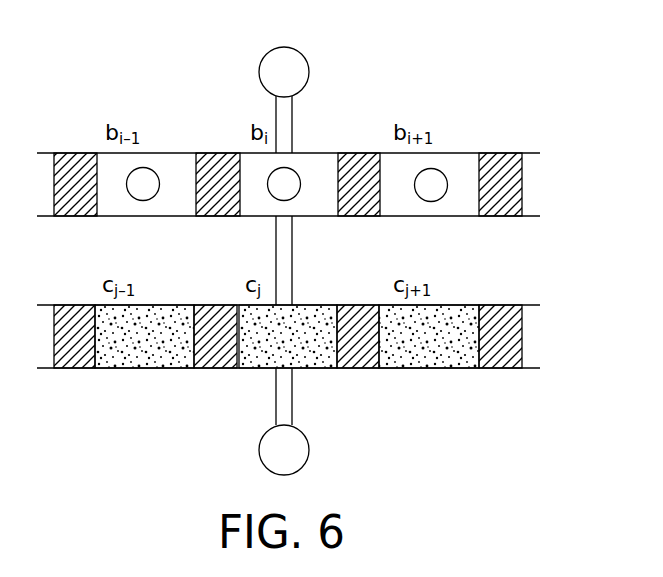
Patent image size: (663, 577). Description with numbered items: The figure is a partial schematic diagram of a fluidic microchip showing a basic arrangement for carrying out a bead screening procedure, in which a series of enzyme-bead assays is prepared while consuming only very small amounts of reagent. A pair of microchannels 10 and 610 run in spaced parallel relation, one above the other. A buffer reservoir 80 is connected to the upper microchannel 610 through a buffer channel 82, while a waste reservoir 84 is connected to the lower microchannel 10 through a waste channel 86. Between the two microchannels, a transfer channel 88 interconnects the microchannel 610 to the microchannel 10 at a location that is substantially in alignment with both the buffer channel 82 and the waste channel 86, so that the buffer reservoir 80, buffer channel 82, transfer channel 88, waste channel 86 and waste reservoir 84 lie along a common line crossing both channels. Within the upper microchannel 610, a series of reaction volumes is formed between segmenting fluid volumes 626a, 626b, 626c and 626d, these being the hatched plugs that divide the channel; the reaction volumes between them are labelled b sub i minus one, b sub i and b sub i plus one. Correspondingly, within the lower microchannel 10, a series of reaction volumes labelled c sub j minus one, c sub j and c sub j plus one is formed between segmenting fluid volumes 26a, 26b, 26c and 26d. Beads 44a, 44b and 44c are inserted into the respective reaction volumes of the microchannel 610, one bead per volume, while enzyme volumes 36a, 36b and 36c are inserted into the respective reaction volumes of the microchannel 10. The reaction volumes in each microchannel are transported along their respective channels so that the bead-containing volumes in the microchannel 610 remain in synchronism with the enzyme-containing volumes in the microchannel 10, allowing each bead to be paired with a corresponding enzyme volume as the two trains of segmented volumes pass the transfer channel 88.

The microchannel 10 is at (177, 369).
The segmenting fluid volume 26a is at (73, 358).
The segmenting fluid volume 26b is at (222, 354).
The segmenting fluid volume 26c is at (367, 364).
The segmenting fluid volume 26d is at (497, 366).
The enzyme volume 36a is at (170, 304).
The enzyme volume 36b is at (323, 304).
The enzyme volume 36c is at (472, 310).
The bead 44a is at (150, 180).
The bead 44b is at (293, 180).
The bead 44c is at (433, 177).
The buffer reservoir 80 is at (307, 62).
The buffer channel 82 is at (295, 135).
The waste reservoir 84 is at (298, 458).
The waste channel 86 is at (292, 400).
The transfer channel 88 is at (290, 268).
The microchannel 610 is at (110, 153).
The segmenting fluid volume 626a is at (80, 204).
The segmenting fluid volume 626b is at (227, 203).
The segmenting fluid volume 626c is at (358, 209).
The segmenting fluid volume 626d is at (501, 205).